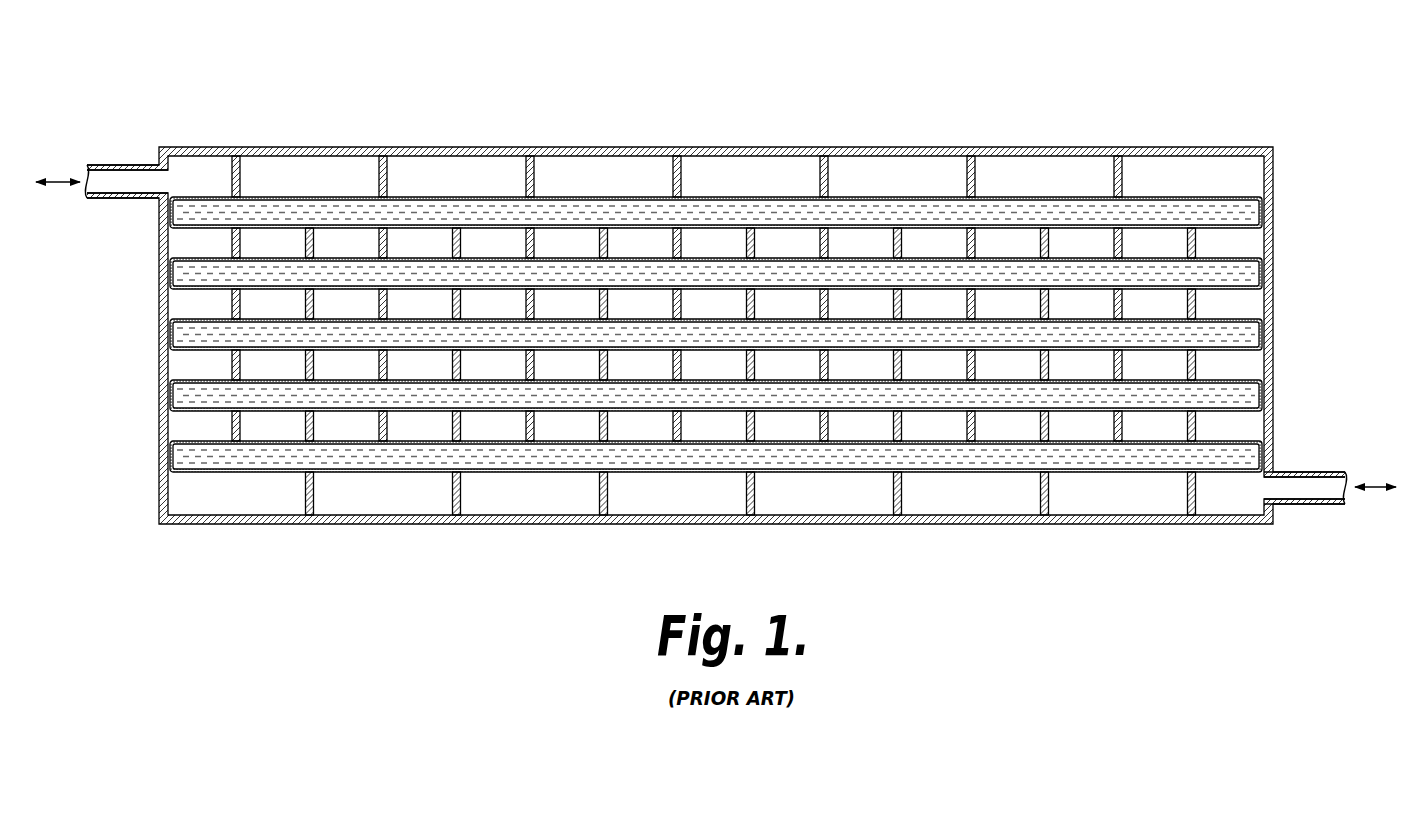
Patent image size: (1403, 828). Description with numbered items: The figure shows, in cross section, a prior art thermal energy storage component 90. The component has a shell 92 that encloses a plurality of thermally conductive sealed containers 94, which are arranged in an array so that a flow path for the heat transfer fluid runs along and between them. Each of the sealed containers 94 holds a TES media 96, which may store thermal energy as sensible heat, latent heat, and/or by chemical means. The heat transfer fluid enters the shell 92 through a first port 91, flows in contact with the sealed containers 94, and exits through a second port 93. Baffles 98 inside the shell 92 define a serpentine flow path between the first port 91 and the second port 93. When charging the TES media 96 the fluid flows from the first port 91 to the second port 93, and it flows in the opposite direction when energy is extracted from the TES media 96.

The thermal energy storage component 90 is at (719, 304).
The first port 91 is at (120, 198).
The shell 92 is at (483, 145).
The second port 93 is at (1313, 471).
The sealed containers 94 is at (1050, 195).
The TES media 96 is at (420, 457).
The baffles 98 is at (1054, 429).